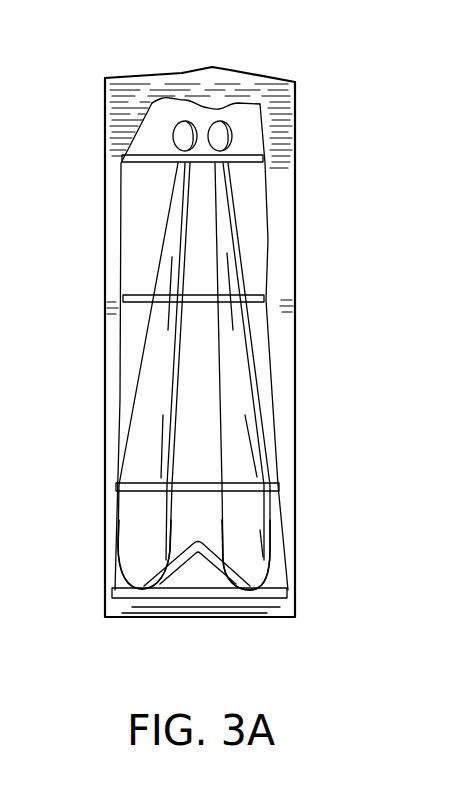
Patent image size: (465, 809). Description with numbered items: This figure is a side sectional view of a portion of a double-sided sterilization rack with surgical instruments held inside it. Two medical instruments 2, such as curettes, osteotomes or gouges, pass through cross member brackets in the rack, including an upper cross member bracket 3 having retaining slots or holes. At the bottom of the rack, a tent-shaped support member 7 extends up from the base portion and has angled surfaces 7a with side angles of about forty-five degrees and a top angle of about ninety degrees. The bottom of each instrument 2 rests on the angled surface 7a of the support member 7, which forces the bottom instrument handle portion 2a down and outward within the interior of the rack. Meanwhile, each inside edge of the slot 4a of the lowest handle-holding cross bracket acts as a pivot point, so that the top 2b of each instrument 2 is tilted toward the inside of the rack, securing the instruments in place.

The medical instrument 2 is at (160, 417).
The bottom instrument handle portion 2a is at (140, 558).
The top of instrument 2b is at (183, 122).
The cross member bracket 3 is at (253, 294).
The slot 4a is at (263, 484).
The support member 7 is at (166, 582).
The angled surface 7a is at (232, 578).